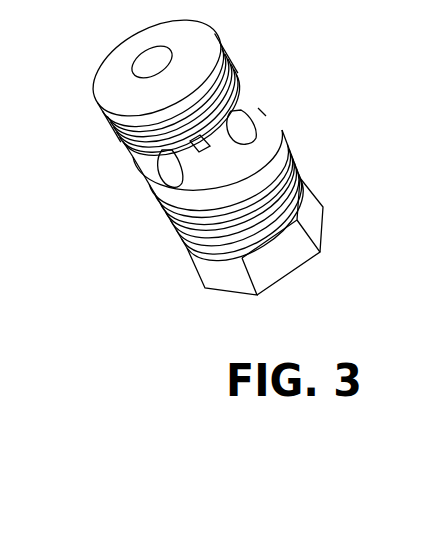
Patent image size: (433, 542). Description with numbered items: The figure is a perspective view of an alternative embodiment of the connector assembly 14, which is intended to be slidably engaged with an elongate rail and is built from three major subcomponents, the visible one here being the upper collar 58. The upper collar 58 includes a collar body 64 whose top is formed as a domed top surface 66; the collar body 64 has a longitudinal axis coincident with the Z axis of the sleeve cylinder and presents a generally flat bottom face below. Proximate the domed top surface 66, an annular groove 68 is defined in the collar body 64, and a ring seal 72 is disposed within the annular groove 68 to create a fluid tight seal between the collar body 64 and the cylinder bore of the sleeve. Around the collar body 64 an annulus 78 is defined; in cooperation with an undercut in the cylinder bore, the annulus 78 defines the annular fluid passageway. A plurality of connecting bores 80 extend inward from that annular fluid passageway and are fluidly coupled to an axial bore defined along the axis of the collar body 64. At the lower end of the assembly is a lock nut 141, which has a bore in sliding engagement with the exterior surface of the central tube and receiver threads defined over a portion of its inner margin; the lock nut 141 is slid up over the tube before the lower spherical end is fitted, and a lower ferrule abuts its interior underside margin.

The connector assembly 14 is at (256, 29).
The collar body 64 is at (211, 18).
The domed top surface 66 is at (114, 66).
The upper collar 58 is at (250, 78).
The annular groove 68 is at (112, 137).
The connecting bores 80 is at (280, 130).
The ring seal 72 is at (131, 163).
The annulus 78 is at (262, 106).
The lock nut 141 is at (285, 263).